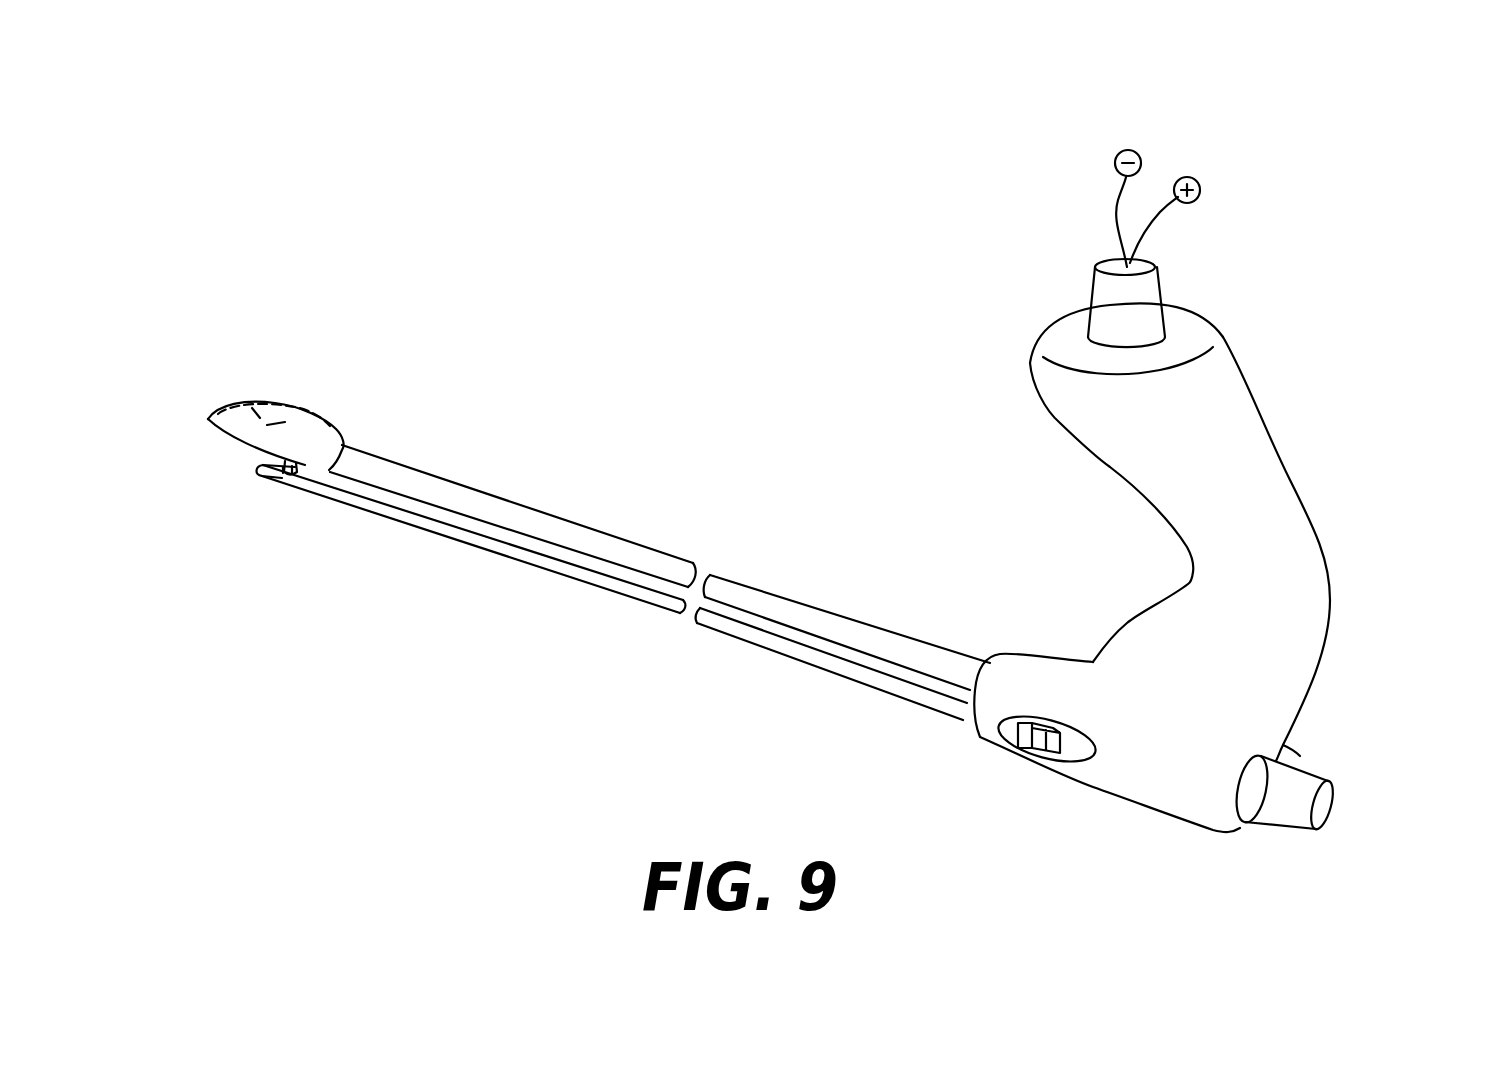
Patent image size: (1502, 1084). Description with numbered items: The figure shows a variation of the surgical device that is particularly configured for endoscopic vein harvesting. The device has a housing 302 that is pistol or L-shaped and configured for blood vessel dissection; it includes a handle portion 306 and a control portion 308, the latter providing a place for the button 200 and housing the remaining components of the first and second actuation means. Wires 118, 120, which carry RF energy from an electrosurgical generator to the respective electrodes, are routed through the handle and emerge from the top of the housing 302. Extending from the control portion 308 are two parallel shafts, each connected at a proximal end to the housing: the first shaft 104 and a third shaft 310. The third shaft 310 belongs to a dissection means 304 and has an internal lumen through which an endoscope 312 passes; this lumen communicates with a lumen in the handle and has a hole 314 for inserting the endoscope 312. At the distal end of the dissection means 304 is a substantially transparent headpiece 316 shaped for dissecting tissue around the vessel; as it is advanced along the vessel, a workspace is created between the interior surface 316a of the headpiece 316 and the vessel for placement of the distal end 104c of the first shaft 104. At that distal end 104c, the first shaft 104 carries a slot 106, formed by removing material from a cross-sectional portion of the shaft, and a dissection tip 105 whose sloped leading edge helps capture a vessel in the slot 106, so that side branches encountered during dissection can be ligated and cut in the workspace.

The headpiece 316 is at (257, 384).
The interior surface of the headpiece 316a is at (303, 412).
The slot 106 is at (296, 458).
The dissection tip 105 is at (260, 474).
The distal end of the first shaft 104c is at (278, 484).
The first shaft 104 is at (387, 516).
The dissection means 304 is at (563, 489).
The third shaft 310 is at (808, 617).
The handle portion 306 is at (1271, 463).
The housing 302 is at (1344, 518).
The hole 314 is at (1288, 722).
The endoscope 312 is at (1318, 773).
The control portion 308 is at (1190, 797).
The button 200 is at (1050, 757).
The wire 118 is at (1107, 213).
The wire 120 is at (1147, 220).